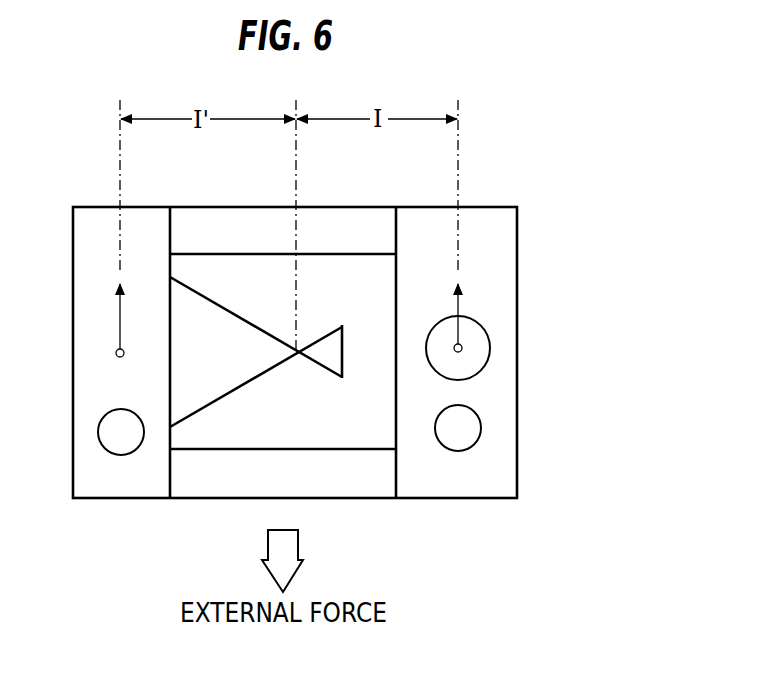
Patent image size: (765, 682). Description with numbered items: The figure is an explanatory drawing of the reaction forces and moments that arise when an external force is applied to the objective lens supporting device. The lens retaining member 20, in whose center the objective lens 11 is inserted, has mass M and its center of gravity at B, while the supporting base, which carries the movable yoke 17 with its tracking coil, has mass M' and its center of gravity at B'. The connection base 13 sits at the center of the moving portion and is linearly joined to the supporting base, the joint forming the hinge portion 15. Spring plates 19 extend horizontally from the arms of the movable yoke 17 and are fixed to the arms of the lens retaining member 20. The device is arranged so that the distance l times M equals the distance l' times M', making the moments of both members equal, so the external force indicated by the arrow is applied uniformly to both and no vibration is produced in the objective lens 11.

The objective lens 11 is at (481, 347).
The connection base 13 is at (325, 353).
The hinge portion 15 is at (296, 356).
The movable yoke 17 is at (88, 353).
The spring plate 19 is at (372, 477).
The lens retaining member 20 is at (494, 266).